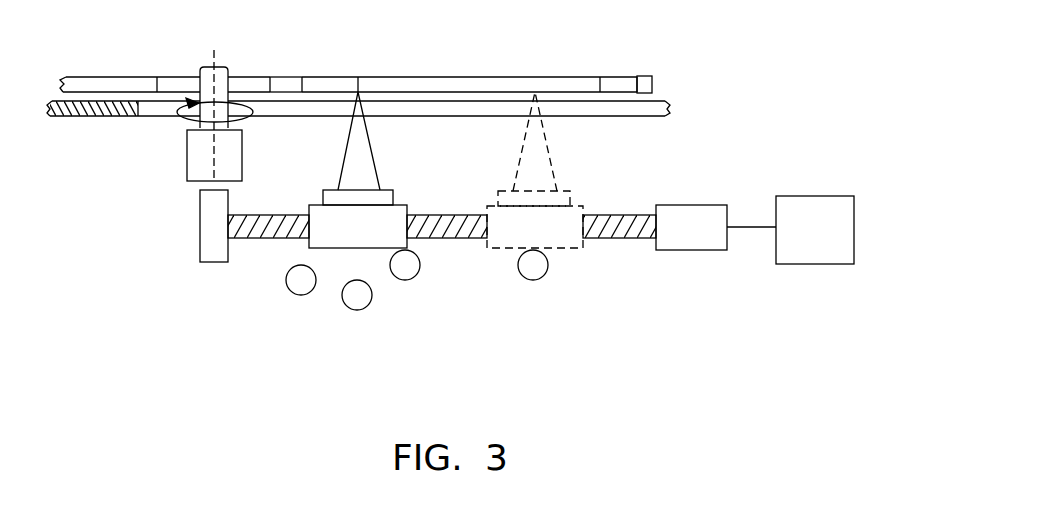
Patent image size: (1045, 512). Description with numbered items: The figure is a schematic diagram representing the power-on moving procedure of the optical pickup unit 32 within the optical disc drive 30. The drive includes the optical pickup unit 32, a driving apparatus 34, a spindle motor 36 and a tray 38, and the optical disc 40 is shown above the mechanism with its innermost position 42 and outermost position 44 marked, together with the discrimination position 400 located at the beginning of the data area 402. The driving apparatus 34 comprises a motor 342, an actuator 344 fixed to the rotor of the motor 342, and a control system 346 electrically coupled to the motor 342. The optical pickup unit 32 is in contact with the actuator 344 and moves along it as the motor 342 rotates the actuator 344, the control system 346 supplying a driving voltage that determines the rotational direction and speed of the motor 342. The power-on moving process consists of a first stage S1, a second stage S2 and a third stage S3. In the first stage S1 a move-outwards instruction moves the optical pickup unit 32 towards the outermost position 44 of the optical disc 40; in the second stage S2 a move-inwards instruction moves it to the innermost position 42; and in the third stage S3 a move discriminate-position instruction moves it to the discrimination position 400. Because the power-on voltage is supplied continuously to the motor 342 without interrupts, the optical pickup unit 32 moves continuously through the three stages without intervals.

The optical disc drive 30 is at (683, 167).
The optical pickup unit 32 is at (402, 213).
The driving apparatus 34 is at (531, 268).
The spindle motor 36 is at (207, 105).
The tray 38 is at (152, 108).
The optical disc 40 is at (405, 61).
The innermost position 42 is at (302, 77).
The outermost position 44 is at (640, 76).
The discrimination position 400 is at (359, 77).
The data area 402 is at (467, 87).
The motor 342 is at (710, 232).
The actuator 344 is at (628, 237).
The control system 346 is at (819, 250).
The first stage S1 is at (508, 265).
The second stage S2 is at (533, 281).
The third stage S3 is at (332, 295).